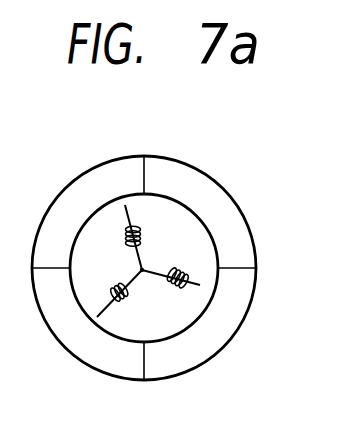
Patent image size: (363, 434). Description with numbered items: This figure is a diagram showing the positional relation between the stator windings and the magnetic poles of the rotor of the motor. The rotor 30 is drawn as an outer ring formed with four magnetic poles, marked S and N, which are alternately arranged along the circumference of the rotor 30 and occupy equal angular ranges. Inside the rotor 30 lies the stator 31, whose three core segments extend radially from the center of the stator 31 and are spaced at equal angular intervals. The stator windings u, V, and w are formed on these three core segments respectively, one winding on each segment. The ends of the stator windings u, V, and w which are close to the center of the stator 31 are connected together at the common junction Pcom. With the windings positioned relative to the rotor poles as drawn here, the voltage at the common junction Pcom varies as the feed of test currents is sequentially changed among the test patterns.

The rotor 30 is at (161, 162).
The stator 31 is at (150, 237).
The stator winding V is at (133, 236).
The stator winding u is at (172, 287).
The stator winding w is at (113, 293).
The common junction Pcom is at (144, 304).